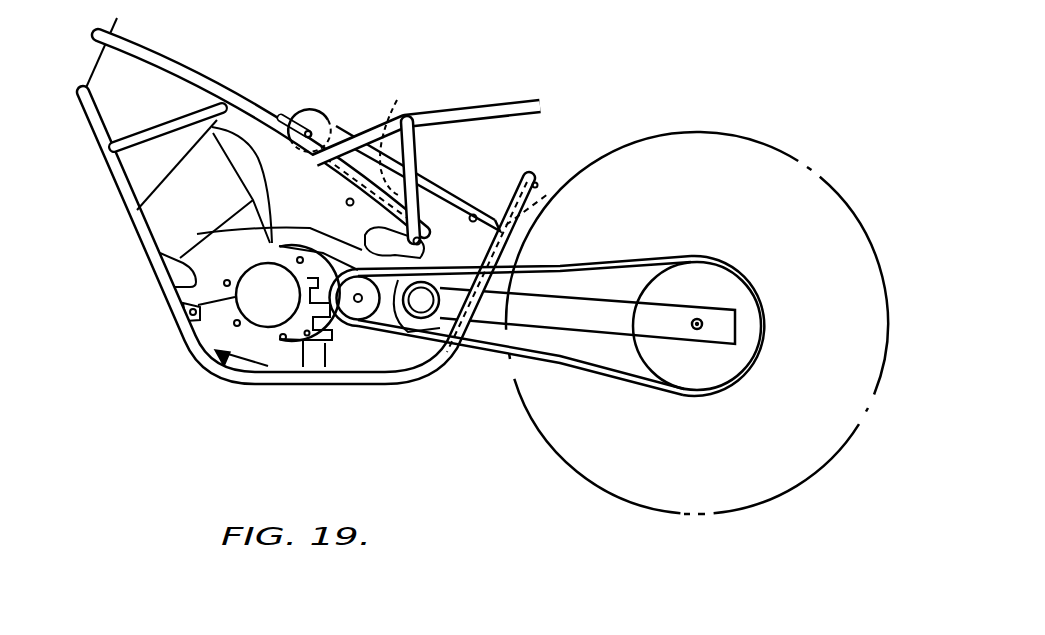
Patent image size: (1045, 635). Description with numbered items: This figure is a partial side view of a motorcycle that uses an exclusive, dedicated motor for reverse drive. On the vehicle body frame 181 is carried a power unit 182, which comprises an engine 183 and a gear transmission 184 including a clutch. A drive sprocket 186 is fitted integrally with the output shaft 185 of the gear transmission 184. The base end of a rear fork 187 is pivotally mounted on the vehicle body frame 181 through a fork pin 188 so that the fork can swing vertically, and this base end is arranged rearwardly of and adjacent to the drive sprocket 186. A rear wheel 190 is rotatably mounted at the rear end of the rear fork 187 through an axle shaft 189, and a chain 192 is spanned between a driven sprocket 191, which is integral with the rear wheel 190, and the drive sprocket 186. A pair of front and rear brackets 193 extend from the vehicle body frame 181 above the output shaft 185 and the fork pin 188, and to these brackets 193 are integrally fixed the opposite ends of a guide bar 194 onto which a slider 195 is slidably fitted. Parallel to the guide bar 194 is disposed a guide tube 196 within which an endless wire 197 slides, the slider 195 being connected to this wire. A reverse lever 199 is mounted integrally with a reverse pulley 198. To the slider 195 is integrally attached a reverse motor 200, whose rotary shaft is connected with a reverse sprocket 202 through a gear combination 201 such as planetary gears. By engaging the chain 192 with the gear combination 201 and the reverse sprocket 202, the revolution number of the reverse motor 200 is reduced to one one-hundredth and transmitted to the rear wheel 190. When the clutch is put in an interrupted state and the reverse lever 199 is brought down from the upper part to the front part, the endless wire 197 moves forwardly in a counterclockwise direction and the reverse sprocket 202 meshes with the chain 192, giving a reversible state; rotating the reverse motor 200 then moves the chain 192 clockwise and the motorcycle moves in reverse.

The vehicle body frame 181 is at (195, 80).
The power unit 182 is at (215, 355).
The engine 183 is at (168, 286).
The gear transmission 184 is at (323, 345).
The output shaft 185 is at (358, 302).
The drive sprocket 186 is at (420, 304).
The rear fork 187 is at (570, 318).
The fork pin 188 is at (428, 343).
The axle shaft 189 is at (699, 331).
The rear wheel 190 is at (753, 144).
The driven sprocket 191 is at (743, 289).
The chain 192 is at (607, 257).
The brackets 193 is at (474, 216).
The guide bar 194 is at (270, 200).
The slider 195 is at (446, 198).
The guide tube 196 is at (429, 178).
The endless wire 197 is at (397, 157).
The reverse pulley 198 is at (312, 110).
The reverse lever 199 is at (277, 112).
The reverse motor 200 is at (215, 235).
The gear combination 201 is at (300, 257).
The reverse sprocket 202 is at (436, 349).